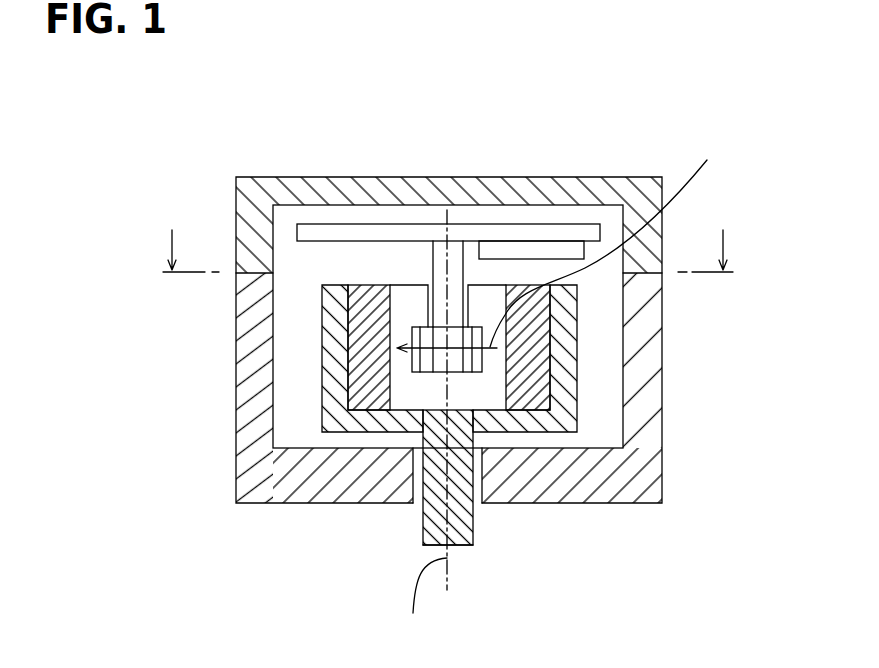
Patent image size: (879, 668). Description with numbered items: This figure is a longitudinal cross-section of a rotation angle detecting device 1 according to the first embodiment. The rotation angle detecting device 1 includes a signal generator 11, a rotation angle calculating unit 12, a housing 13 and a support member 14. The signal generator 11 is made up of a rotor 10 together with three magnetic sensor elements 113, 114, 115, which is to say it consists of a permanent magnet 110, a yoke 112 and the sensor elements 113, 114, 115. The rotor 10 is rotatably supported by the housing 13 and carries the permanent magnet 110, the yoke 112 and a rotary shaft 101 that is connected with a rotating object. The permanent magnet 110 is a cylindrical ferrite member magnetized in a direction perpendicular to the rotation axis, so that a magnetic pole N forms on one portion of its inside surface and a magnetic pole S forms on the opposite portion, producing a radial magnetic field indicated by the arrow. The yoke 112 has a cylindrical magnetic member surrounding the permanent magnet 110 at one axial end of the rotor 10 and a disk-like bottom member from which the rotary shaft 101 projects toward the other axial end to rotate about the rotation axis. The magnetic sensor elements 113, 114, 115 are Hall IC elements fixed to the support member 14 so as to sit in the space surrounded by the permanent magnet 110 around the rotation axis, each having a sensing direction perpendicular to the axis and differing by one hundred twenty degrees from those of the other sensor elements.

The rotation angle detecting device 1 is at (680, 110).
The rotor 10 is at (438, 448).
The rotary shaft 101 is at (468, 541).
The signal generator 11 is at (407, 300).
The permanent magnet 110 is at (537, 350).
The yoke 112 is at (558, 398).
The magnetic sensor element 113 is at (460, 373).
The magnetic sensor element 114 is at (478, 372).
The magnetic sensor element 115 is at (418, 372).
The rotation angle calculating unit 12 is at (528, 247).
The housing 13 is at (640, 462).
The support member 14 is at (443, 268).